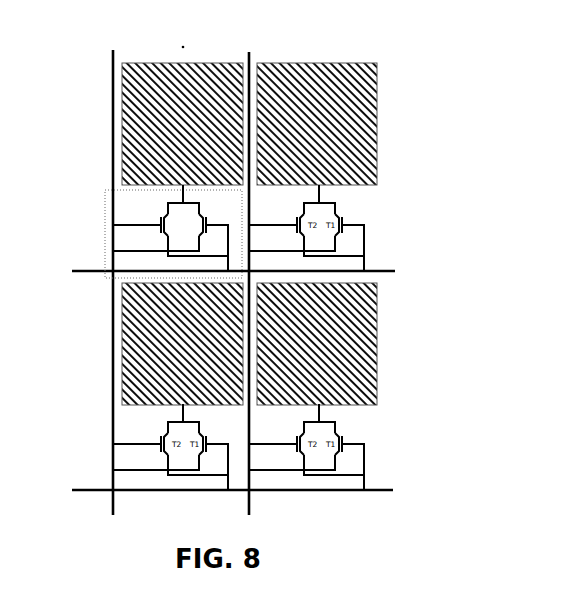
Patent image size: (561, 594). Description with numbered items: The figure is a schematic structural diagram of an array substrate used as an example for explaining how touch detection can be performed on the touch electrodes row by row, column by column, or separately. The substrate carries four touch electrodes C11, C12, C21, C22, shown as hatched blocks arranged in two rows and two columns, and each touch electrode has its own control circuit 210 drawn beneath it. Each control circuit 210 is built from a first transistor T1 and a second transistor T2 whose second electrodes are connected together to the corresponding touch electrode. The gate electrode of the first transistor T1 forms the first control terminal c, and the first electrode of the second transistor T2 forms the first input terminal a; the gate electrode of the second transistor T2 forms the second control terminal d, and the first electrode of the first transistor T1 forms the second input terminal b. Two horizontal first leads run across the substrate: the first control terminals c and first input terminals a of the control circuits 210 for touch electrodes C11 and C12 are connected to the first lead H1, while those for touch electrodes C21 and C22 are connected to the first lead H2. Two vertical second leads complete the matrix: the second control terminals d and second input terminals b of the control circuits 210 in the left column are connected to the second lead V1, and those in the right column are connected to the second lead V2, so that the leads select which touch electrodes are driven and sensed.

The control circuit 210 is at (110, 198).
The touch electrode C11 is at (124, 111).
The touch electrode C12 is at (350, 122).
The touch electrode C21 is at (130, 336).
The touch electrode C22 is at (352, 341).
The second lead V1 is at (111, 271).
The second lead V2 is at (247, 271).
The first lead H1 is at (219, 271).
The first lead H2 is at (218, 491).
The first transistor T1 is at (197, 225).
The second transistor T2 is at (171, 225).
The first input terminal a is at (198, 247).
The second input terminal b is at (140, 242).
The first control terminal c is at (217, 239).
The second control terminal d is at (137, 217).